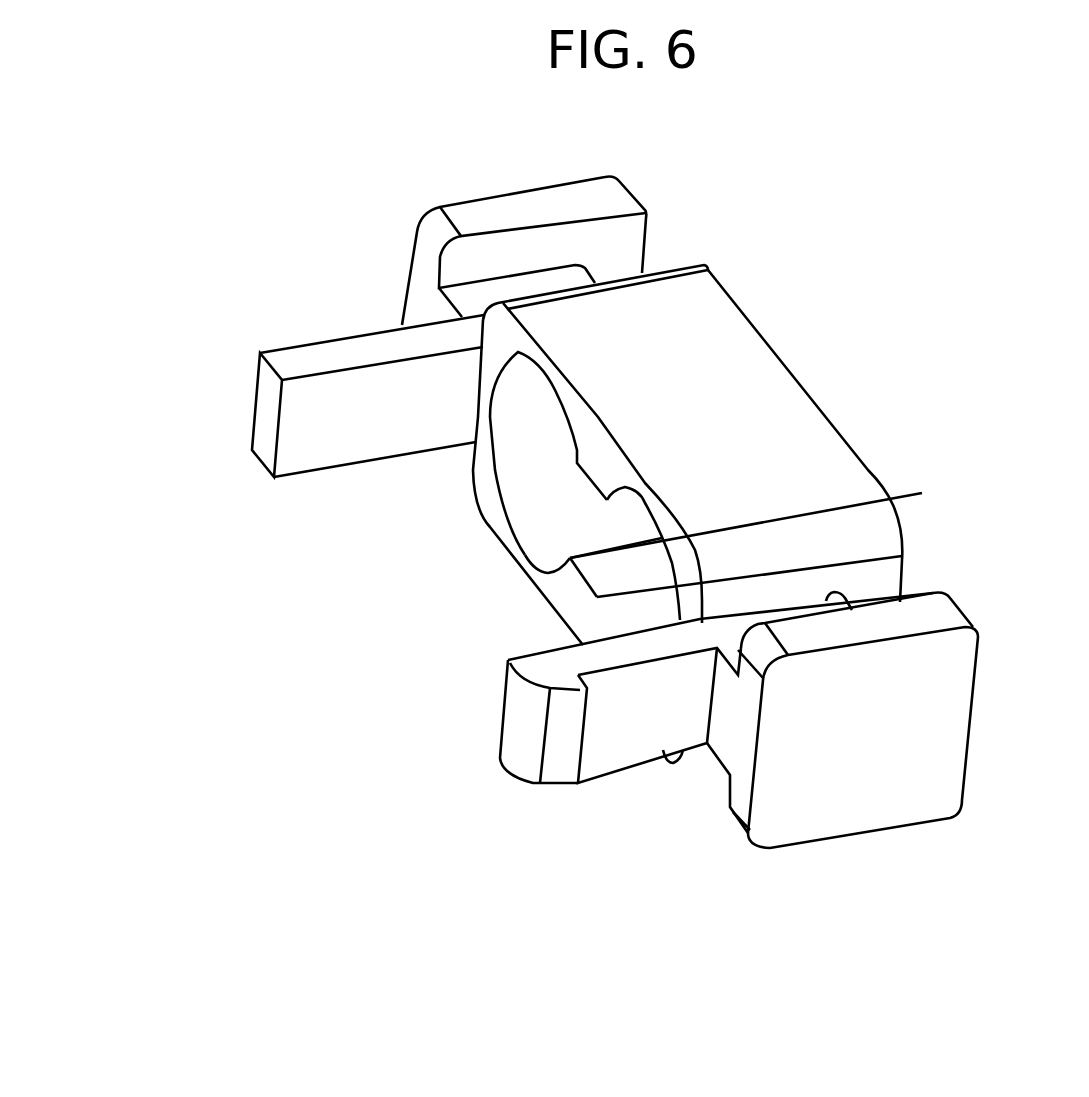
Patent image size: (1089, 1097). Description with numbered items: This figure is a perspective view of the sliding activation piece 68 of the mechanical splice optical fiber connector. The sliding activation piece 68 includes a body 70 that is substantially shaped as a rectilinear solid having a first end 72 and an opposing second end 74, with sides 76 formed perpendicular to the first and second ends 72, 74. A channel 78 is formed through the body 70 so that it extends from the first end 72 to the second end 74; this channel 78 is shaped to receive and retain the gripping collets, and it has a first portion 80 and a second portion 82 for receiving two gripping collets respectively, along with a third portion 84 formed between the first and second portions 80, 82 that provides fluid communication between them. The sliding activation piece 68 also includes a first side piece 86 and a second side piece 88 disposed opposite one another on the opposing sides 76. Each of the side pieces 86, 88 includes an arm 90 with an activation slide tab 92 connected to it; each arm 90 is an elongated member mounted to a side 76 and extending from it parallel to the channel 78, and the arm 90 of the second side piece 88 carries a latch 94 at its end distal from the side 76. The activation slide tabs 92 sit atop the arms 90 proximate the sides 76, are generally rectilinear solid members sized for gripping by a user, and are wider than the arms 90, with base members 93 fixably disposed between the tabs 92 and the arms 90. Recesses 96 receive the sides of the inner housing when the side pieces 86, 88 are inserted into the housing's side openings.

The sliding activation piece 68 is at (247, 181).
The body 70 is at (850, 455).
The first end 72 is at (760, 323).
The second end 74 is at (563, 597).
The sides 76 is at (477, 407).
The channel 78 is at (537, 492).
The first portion 80 is at (518, 427).
The second portion 82 is at (630, 613).
The third portion 84 is at (640, 560).
The first side piece 86 is at (505, 202).
The second side piece 88 is at (872, 770).
The arm 90 is at (267, 403).
The activation slide tab 92 is at (563, 212).
The base member 93 is at (523, 292).
The latch 94 is at (523, 747).
The recesses 96 is at (612, 262).